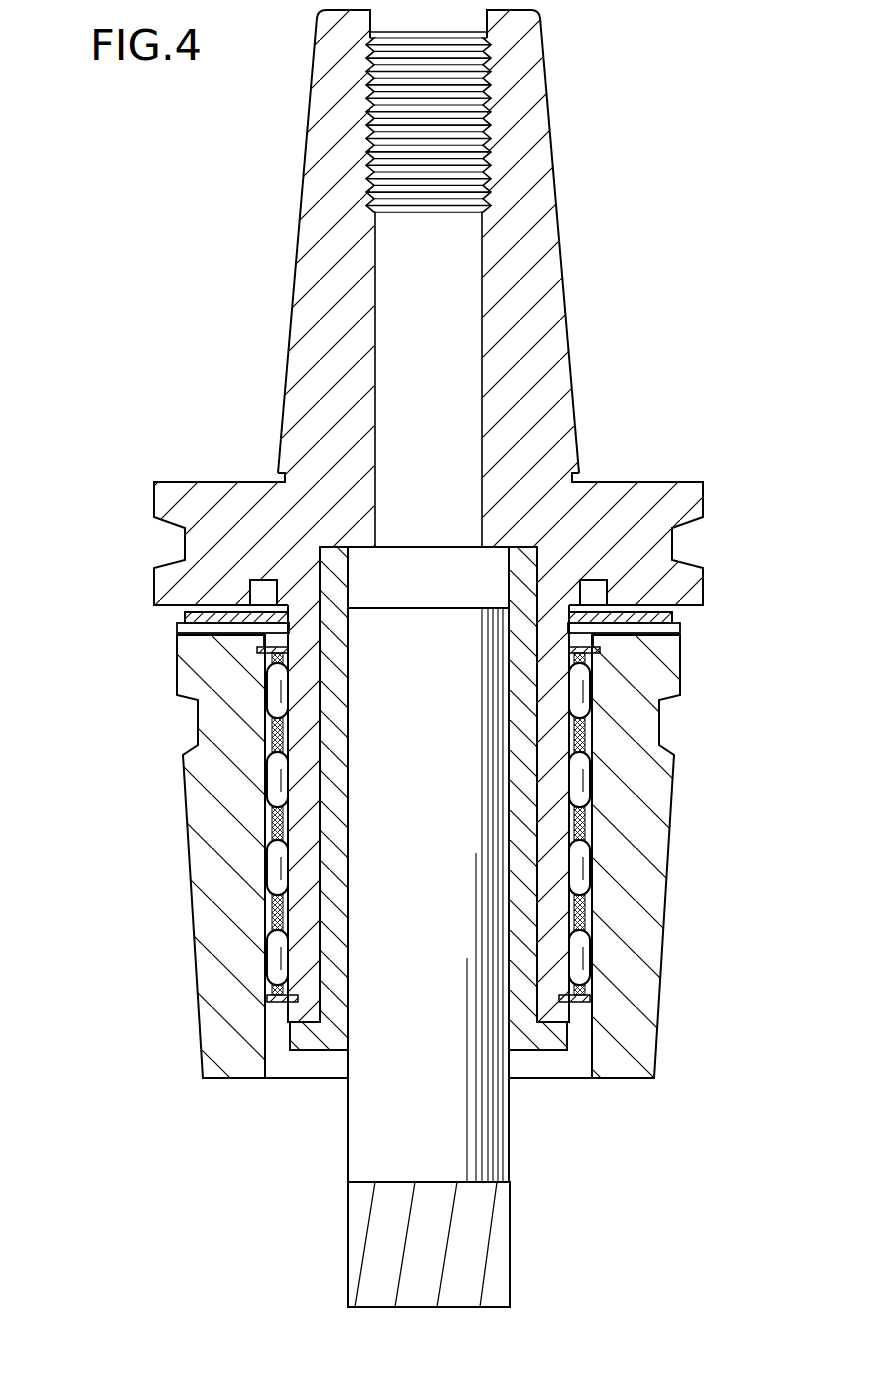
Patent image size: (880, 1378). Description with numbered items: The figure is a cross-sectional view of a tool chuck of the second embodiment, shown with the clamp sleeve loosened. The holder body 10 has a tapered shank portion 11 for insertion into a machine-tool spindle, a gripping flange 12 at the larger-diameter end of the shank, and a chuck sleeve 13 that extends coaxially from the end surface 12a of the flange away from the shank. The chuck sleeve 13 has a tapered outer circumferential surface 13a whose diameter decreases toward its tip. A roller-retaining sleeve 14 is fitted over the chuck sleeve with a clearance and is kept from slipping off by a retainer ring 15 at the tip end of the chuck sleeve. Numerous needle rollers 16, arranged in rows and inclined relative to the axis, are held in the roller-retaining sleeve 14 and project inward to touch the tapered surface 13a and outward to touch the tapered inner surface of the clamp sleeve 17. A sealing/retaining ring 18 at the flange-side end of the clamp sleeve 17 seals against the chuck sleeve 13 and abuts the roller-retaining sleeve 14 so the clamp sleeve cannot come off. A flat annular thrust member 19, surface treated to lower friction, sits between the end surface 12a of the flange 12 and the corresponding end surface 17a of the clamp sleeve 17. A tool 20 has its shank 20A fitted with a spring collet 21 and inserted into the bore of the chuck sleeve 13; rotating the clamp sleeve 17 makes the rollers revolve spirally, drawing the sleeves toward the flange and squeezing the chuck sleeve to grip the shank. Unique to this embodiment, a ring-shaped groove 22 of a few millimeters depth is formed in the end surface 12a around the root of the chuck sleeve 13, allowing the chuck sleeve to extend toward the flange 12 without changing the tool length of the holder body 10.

The holder body 10 is at (438, 516).
The tapered shank portion 11 is at (573, 332).
The gripping flange 12 is at (628, 496).
The end surface 12a is at (183, 613).
The chuck sleeve 13 is at (552, 747).
The tapered outer circumferential surface 13a is at (597, 658).
The roller-retaining sleeve 14 is at (597, 817).
The retainer ring 15 is at (578, 1002).
The needle rollers 16 is at (583, 872).
The clamp sleeve 17 is at (650, 955).
The end surface 17a is at (180, 634).
The sealing/retaining ring 18 is at (618, 602).
The thrust member 19 is at (225, 618).
The tool 20 is at (439, 927).
The shank 20A is at (383, 1102).
The spring collet 21 is at (517, 978).
The groove 22 is at (263, 590).